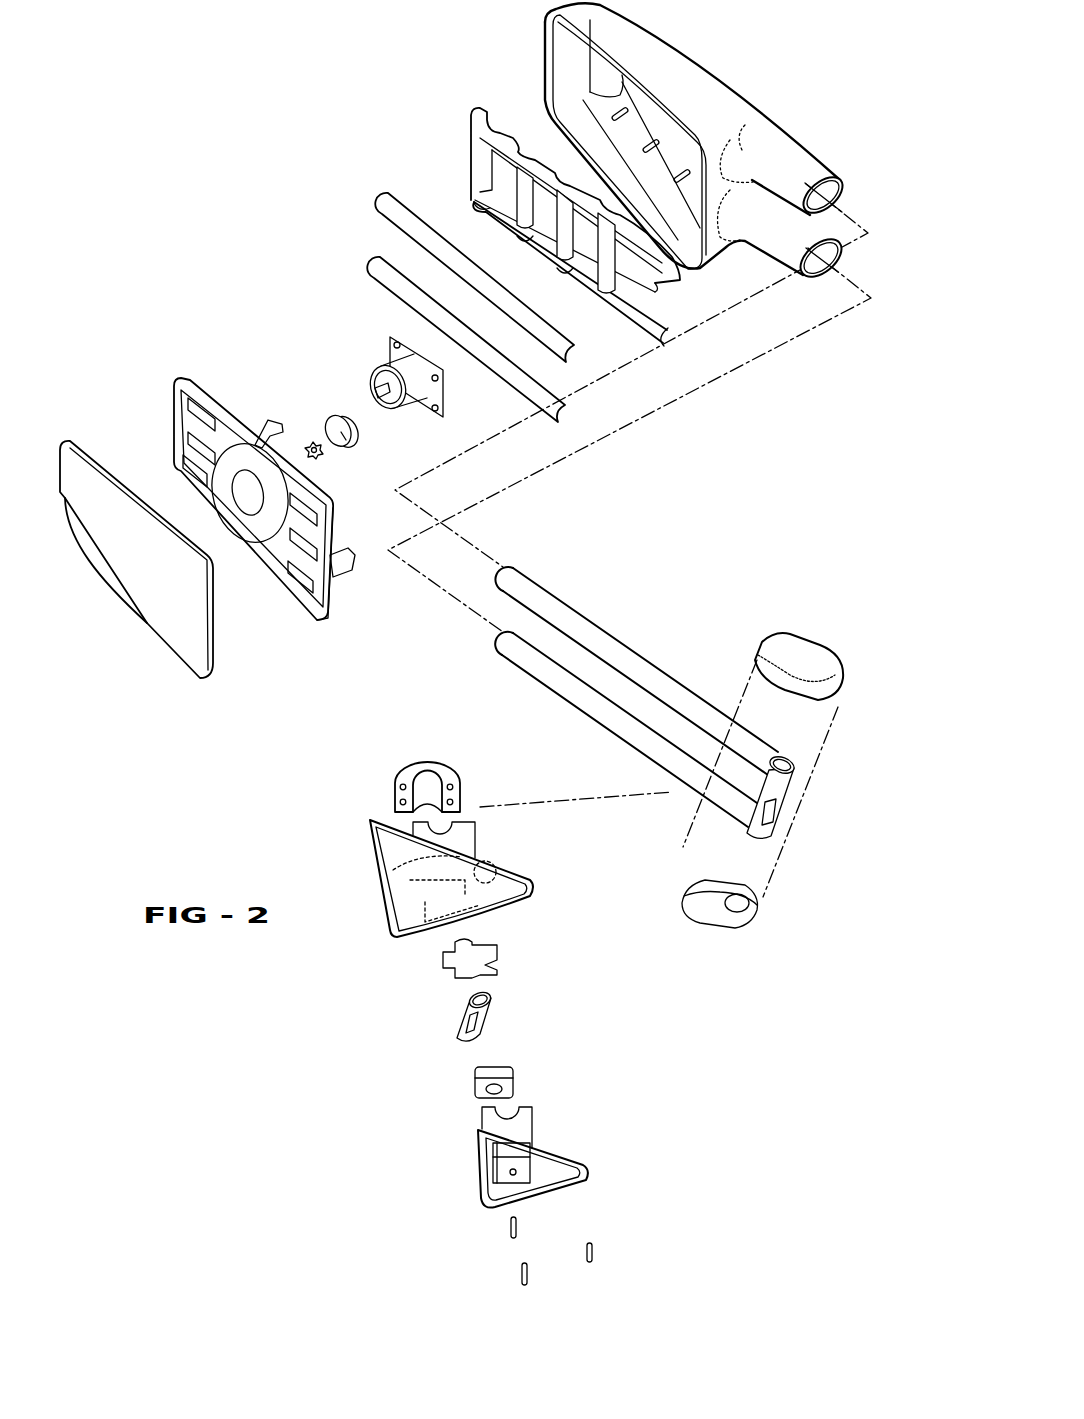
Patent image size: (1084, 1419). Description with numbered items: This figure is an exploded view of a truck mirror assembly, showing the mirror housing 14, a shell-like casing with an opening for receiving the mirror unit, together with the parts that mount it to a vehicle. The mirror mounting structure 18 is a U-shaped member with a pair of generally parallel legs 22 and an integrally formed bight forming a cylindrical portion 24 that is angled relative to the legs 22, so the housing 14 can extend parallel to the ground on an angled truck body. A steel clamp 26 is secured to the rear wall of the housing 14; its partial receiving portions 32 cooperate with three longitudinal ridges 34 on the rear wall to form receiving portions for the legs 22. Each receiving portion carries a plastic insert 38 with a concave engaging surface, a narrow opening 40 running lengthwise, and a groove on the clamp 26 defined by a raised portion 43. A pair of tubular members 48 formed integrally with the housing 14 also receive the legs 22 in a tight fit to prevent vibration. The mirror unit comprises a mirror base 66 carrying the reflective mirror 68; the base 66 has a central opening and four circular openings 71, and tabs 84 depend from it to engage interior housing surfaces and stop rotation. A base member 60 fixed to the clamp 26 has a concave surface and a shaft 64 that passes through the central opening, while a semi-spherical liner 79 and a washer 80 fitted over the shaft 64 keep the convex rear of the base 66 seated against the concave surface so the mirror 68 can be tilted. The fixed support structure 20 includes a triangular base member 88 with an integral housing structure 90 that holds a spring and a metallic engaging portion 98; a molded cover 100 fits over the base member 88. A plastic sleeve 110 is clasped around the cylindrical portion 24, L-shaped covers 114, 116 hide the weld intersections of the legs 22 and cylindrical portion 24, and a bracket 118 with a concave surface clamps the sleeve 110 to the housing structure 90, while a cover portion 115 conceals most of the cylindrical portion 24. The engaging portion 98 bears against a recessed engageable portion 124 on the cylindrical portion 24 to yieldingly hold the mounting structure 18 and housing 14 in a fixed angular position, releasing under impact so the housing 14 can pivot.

The mirror housing 14 is at (737, 92).
The mirror mounting structure 18 is at (574, 604).
The fixed support structure 20 is at (593, 1165).
The legs 22 is at (653, 664).
The cylindrical portion 24 is at (760, 836).
The clamp 26 is at (467, 156).
The partial receiving portions 32 is at (663, 257).
The longitudinal ridges 34 is at (615, 97).
The plastic insert 38 is at (368, 262).
The narrow opening 40 is at (443, 238).
The raised portion 43 is at (513, 140).
The tubular members 48 is at (800, 160).
The base member 60 is at (377, 357).
The shaft 64 is at (384, 392).
The mirror base 66 is at (172, 420).
The reflective mirror 68 is at (136, 615).
The circular openings 71 is at (262, 533).
The semi-spherical liner 79 is at (328, 422).
The washer 80 is at (325, 462).
The tabs 84 is at (348, 568).
The triangular base member 88 is at (483, 1197).
The housing structure 90 is at (533, 1123).
The non-deformable engaging portion 98 is at (472, 1075).
The cover 100 is at (540, 882).
The plastic sleeve 110 is at (499, 1016).
The L-shaped plastic cover 114 is at (741, 928).
The cover portion 115 is at (470, 773).
The L-shaped plastic cover 116 is at (820, 642).
The bracket 118 is at (438, 972).
The engageable portion 124 is at (778, 807).